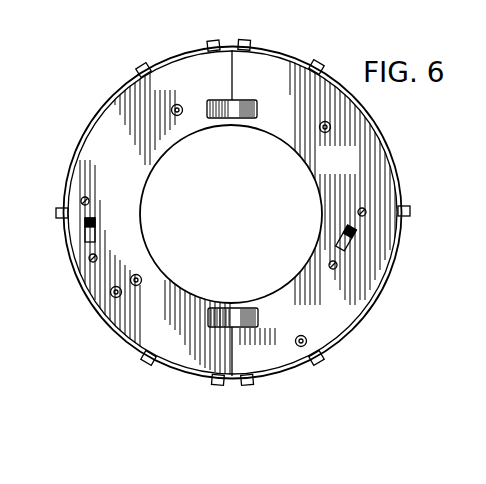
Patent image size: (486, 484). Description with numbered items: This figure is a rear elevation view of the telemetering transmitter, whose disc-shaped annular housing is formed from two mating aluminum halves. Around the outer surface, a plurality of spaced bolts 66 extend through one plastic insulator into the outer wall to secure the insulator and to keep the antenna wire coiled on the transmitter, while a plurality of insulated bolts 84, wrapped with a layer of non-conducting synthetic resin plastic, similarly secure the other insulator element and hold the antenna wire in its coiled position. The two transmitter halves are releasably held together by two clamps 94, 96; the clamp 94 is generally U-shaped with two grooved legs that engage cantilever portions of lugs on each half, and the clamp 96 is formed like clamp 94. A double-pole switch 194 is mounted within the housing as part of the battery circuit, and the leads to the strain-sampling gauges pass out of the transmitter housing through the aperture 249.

The insulated bolts 84 is at (213, 40).
The spaced bolts 66 is at (319, 62).
The clamp 94 is at (248, 106).
The clamp 96 is at (252, 327).
The aperture 249 is at (327, 133).
The double-pole switch 194 is at (96, 236).